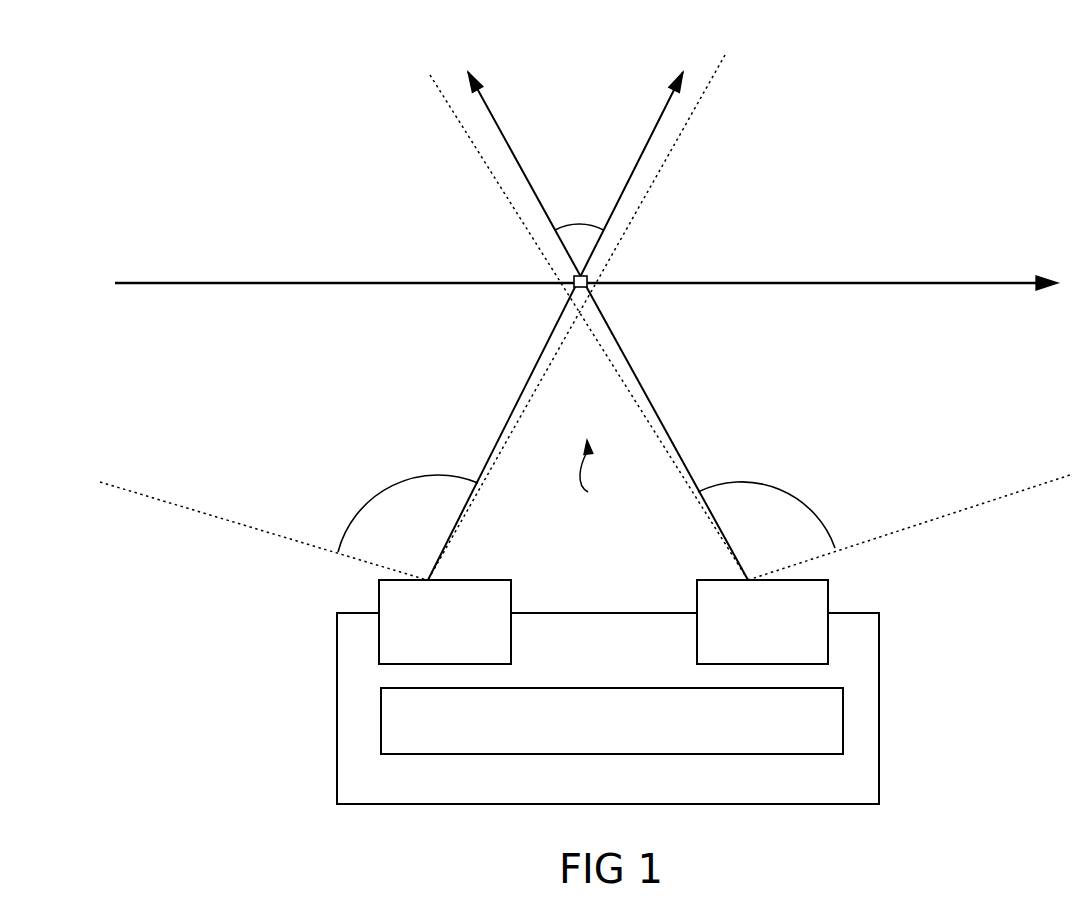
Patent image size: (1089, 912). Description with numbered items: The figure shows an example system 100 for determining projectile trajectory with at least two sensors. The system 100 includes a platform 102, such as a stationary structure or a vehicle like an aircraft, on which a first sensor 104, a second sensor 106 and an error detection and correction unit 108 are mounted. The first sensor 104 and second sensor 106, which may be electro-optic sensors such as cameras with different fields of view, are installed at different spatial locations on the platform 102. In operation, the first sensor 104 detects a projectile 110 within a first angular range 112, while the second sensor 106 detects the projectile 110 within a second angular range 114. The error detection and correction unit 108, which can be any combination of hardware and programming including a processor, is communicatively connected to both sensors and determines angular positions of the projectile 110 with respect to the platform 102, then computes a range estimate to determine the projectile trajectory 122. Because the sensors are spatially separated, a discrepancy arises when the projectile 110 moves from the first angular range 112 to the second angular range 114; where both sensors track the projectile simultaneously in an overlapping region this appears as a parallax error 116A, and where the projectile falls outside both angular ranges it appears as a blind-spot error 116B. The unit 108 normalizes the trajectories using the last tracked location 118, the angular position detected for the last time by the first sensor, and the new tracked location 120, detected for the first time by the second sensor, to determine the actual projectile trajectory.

The system 100 is at (585, 458).
The platform 102 is at (608, 708).
The first sensor 104 is at (445, 622).
The second sensor 106 is at (762, 622).
The error detection and correction unit 108 is at (612, 721).
The projectile 110 is at (589, 287).
The first angular range 112 is at (289, 506).
The second angular range 114 is at (884, 511).
The parallax error 116A is at (581, 198).
The blind-spot error 116B is at (594, 497).
The last tracked location 118 is at (653, 188).
The new tracked location 120 is at (503, 190).
The projectile trajectory 122 is at (935, 282).